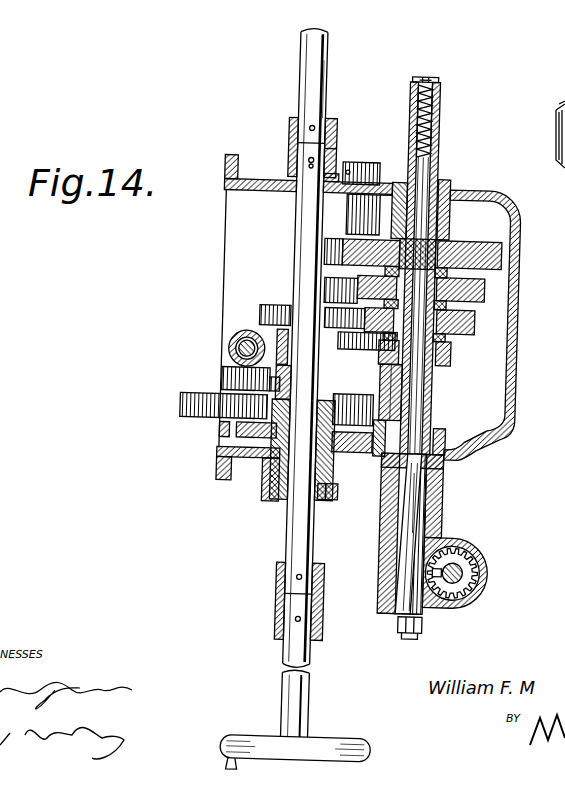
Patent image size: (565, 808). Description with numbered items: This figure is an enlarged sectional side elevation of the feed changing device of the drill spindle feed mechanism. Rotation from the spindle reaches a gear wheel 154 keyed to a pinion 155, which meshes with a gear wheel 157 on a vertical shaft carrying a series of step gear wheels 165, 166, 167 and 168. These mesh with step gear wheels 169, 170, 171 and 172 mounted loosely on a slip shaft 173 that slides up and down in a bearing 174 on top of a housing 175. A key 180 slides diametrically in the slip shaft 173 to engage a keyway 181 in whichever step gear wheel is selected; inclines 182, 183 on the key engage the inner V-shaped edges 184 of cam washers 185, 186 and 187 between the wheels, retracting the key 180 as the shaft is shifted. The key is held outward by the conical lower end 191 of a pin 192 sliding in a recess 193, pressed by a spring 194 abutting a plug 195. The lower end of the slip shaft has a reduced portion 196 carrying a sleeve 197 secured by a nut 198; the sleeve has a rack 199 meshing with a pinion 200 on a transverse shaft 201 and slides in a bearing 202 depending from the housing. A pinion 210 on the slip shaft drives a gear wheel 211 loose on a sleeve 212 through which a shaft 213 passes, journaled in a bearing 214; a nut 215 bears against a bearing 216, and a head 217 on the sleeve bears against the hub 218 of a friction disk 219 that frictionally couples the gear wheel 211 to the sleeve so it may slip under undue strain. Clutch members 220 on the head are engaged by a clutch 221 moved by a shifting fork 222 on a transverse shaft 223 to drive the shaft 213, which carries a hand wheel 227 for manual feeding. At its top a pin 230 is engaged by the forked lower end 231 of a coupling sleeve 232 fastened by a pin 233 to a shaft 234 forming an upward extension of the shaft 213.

The gear wheel 154 is at (182, 407).
The pinion 155 is at (270, 383).
The gear wheel 157 is at (332, 447).
The step gear wheel 165 is at (412, 370).
The step gear wheel 166 is at (278, 305).
The step gear wheel 167 is at (332, 283).
The step gear wheel 168 is at (337, 248).
The step gear wheel 169 is at (447, 358).
The step gear wheel 170 is at (480, 325).
The step gear wheel 171 is at (488, 290).
The step gear wheel 172 is at (502, 257).
The slip shaft 173 is at (412, 412).
The bearing 174 is at (448, 223).
The housing 175 is at (512, 397).
The key 180 is at (443, 245).
The keyway 181 is at (420, 360).
The incline 182 is at (564, 175).
The incline 183 is at (564, 92).
The inner V-shaped edge 184 is at (430, 350).
The cam washer 185 is at (455, 342).
The cam washer 186 is at (450, 307).
The cam washer 187 is at (445, 272).
The conical lower end 191 is at (374, 200).
The pin 192 is at (435, 173).
The recess 193 is at (410, 142).
The spring 194 is at (442, 100).
The plug 195 is at (430, 82).
The reduced portion 196 is at (415, 483).
The sleeve 197 is at (420, 522).
The nut 198 is at (422, 628).
The rack 199 is at (435, 502).
The pinion 200 is at (480, 560).
The transverse shaft 201 is at (458, 578).
The bearing 202 is at (383, 563).
The pinion 210 is at (490, 443).
The gear wheel 211 is at (237, 438).
The sleeve 212 is at (273, 467).
The shaft 213 is at (293, 549).
The bearing 214 is at (288, 174).
The nut 215 is at (343, 495).
The bearing 216 is at (340, 477).
The head 217 is at (273, 400).
The hub 218 is at (222, 427).
The friction disk 219 is at (233, 448).
The clutch members 220 is at (292, 390).
The clutch 221 is at (277, 332).
The shifting fork 222 is at (237, 337).
The transverse shaft 223 is at (245, 350).
The hand wheel 227 is at (250, 737).
The pin 230 is at (338, 145).
The forked lower end 231 is at (310, 165).
The coupling sleeve 232 is at (292, 123).
The pin 233 is at (328, 112).
The shaft 234 is at (328, 58).